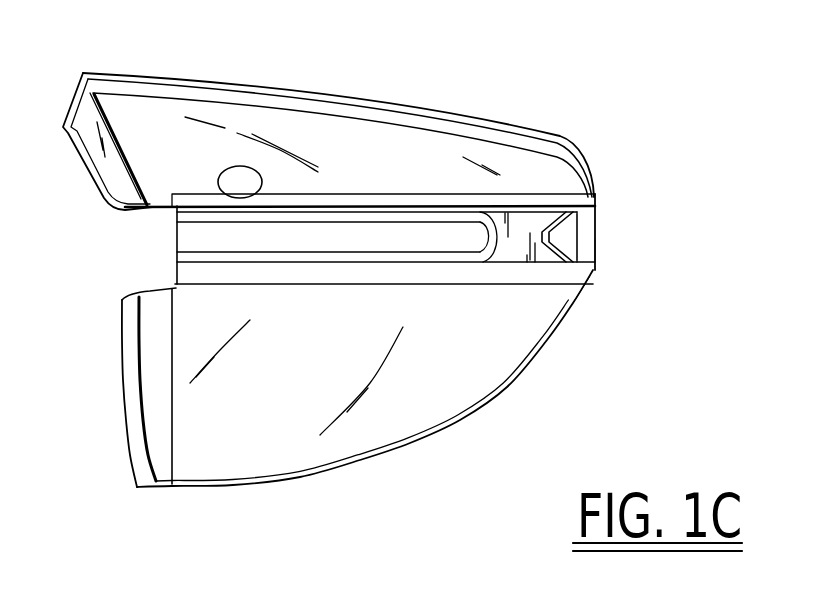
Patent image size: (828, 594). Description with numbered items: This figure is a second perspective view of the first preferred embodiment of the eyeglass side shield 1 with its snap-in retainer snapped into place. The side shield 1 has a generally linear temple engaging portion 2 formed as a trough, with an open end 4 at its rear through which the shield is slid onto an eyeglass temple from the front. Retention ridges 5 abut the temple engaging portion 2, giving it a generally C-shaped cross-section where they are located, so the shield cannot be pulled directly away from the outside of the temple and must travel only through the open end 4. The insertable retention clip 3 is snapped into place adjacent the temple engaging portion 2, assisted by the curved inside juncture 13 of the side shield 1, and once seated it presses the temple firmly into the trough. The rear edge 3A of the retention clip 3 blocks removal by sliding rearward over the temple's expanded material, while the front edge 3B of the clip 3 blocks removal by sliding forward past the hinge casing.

The side shield 1 is at (383, 80).
The temple engaging portion 2 is at (403, 221).
The retention clip 3 is at (522, 240).
The rear edge of retention clip 3A is at (579, 232).
The front edge of retention clip 3B is at (495, 243).
The open end 4 is at (598, 250).
The retention ridges 5 is at (203, 217).
The curved inside juncture 13 is at (567, 273).